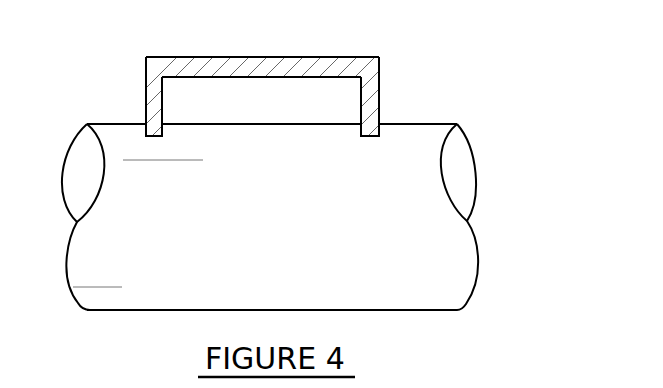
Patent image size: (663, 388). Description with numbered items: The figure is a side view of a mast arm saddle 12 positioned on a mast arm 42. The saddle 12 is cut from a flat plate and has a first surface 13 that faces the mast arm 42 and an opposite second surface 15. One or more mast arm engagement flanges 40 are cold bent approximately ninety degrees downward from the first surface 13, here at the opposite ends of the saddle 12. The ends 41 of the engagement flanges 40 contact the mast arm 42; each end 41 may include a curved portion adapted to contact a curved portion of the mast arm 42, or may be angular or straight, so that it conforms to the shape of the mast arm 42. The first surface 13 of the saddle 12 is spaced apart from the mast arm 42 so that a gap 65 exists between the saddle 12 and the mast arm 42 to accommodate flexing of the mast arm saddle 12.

The mast arm saddle 12 is at (466, 45).
The first surface 13 is at (305, 78).
The second surface 15 is at (253, 57).
The mast arm engagement flange 40 is at (380, 93).
The end of engagement flange 41 is at (380, 125).
The mast arm 42 is at (428, 135).
The gap 65 is at (192, 102).